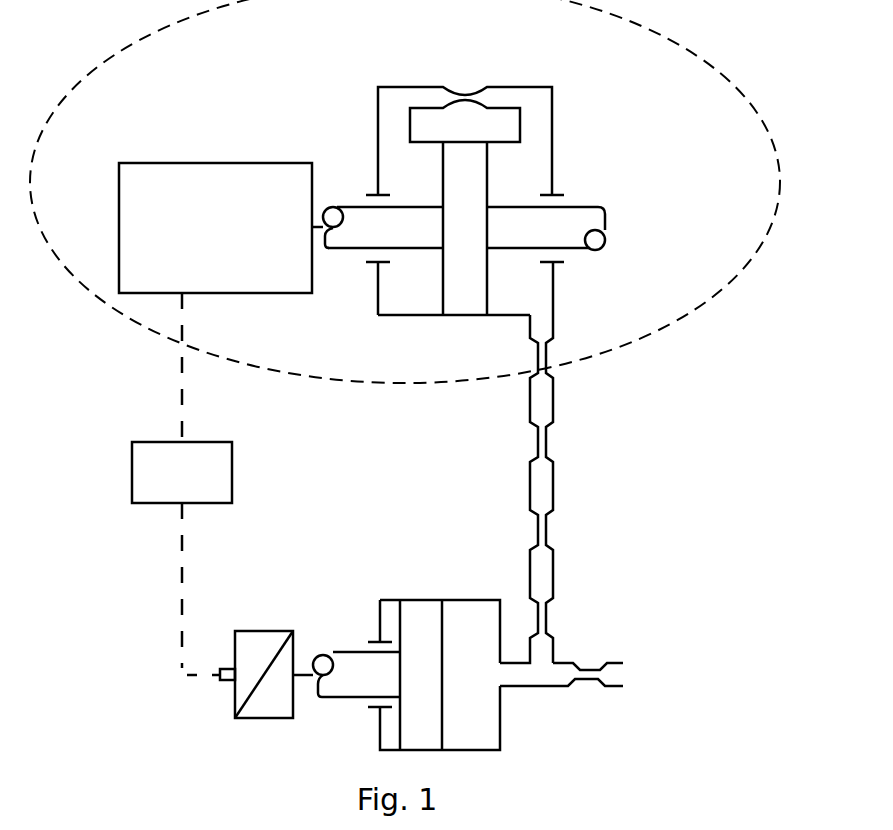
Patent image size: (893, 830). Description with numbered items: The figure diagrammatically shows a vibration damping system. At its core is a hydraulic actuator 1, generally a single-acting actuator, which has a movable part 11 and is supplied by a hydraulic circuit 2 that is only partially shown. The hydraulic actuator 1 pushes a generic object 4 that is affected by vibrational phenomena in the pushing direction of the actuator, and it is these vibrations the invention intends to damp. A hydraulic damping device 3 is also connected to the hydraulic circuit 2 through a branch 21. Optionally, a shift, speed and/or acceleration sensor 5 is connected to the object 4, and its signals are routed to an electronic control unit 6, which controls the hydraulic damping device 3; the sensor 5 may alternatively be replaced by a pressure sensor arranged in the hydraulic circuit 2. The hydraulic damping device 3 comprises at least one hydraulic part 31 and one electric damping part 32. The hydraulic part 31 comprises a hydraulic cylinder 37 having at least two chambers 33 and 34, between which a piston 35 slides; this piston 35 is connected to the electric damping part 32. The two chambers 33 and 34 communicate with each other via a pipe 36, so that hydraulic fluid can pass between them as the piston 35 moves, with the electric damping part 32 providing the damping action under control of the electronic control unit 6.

The hydraulic actuator 1 is at (566, 744).
The hydraulic circuit 2 is at (568, 687).
The hydraulic damping device 3 is at (650, 337).
The object 4 is at (268, 737).
The sensor 5 is at (225, 683).
The electronic control unit 6 is at (165, 485).
The movable part 11 is at (342, 668).
The branch 21 is at (552, 465).
The hydraulic part 31 is at (600, 153).
The electric damping part 32 is at (215, 232).
The first chamber 33 is at (398, 291).
The second chamber 34 is at (495, 290).
The piston 35 is at (467, 297).
The pipe 36 is at (533, 85).
The hydraulic cylinder 37 is at (385, 316).